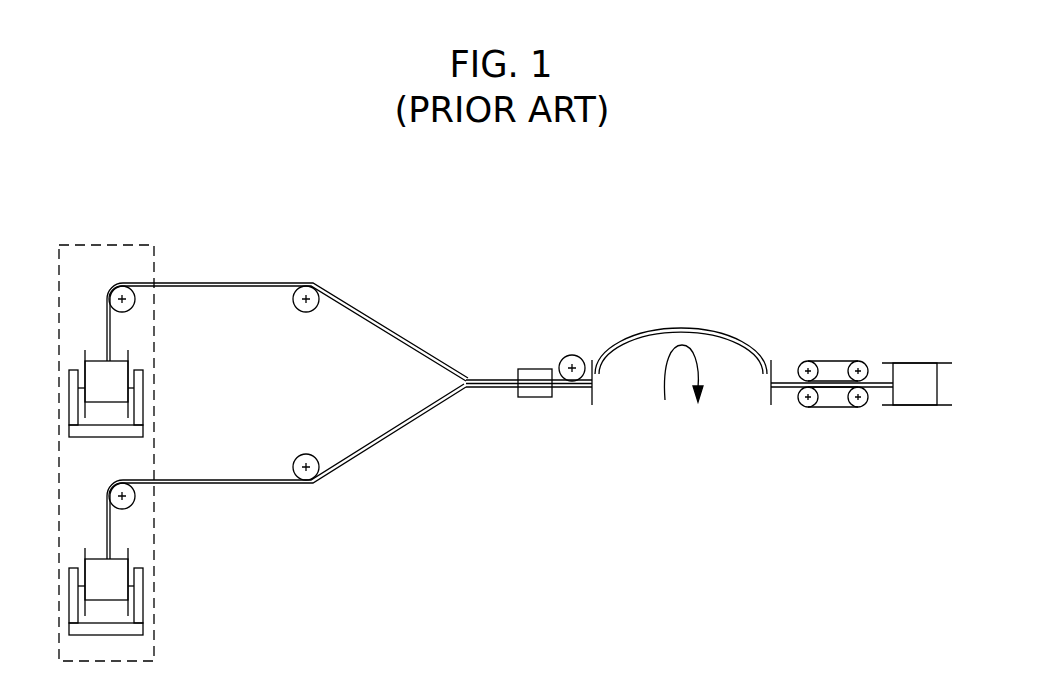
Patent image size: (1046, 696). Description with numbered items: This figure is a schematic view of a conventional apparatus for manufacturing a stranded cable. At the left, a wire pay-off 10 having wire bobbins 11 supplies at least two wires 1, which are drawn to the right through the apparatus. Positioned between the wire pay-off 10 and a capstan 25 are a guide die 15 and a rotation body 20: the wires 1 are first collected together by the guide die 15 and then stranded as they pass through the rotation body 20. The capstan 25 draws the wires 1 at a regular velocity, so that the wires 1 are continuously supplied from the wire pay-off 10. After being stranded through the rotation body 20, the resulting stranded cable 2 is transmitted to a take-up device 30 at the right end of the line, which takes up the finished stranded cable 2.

The wire 1 is at (385, 328).
The stranded cable 2 is at (497, 377).
The wire pay-off 10 is at (119, 243).
The wire bobbin 11 is at (123, 395).
The guide die 15 is at (536, 392).
The rotation body 20 is at (680, 328).
The capstan 25 is at (853, 334).
The take-up device 30 is at (915, 368).